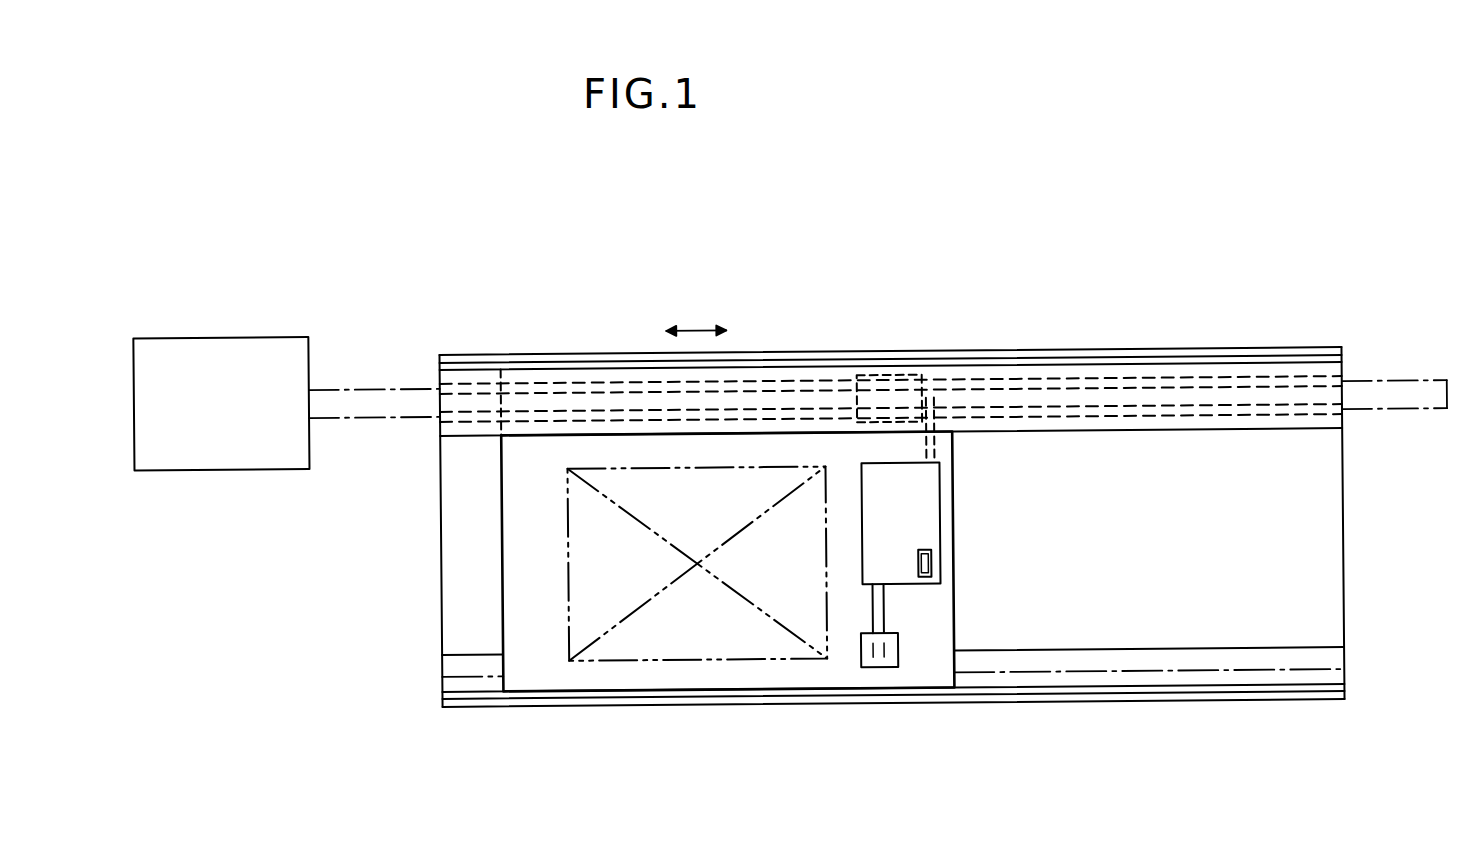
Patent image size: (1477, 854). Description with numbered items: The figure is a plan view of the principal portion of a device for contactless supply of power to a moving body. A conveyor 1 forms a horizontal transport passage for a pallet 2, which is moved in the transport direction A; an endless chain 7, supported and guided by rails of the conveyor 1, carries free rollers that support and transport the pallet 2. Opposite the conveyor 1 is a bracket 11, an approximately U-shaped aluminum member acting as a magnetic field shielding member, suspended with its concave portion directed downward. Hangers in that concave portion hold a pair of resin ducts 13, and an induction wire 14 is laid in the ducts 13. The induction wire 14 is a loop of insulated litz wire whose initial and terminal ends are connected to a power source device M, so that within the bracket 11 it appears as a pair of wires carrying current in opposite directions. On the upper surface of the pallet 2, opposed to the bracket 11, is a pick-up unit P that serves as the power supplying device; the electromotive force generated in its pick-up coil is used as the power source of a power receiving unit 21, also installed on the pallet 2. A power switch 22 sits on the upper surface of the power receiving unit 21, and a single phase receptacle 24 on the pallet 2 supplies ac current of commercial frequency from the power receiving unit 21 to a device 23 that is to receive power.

The conveyor 1 is at (1155, 352).
The pallet 2 is at (953, 615).
The endless chain 7 is at (1135, 671).
The bracket 11 is at (1108, 436).
The ducts 13 is at (1199, 388).
The induction wire 14 is at (364, 413).
The power receiving unit 21 is at (926, 518).
The power switch 22 is at (918, 565).
The device to receive power 23 is at (566, 575).
The single phase receptacle 24 is at (895, 660).
The power source device M is at (280, 332).
The transport direction A is at (705, 329).
The pick-up unit P is at (903, 366).